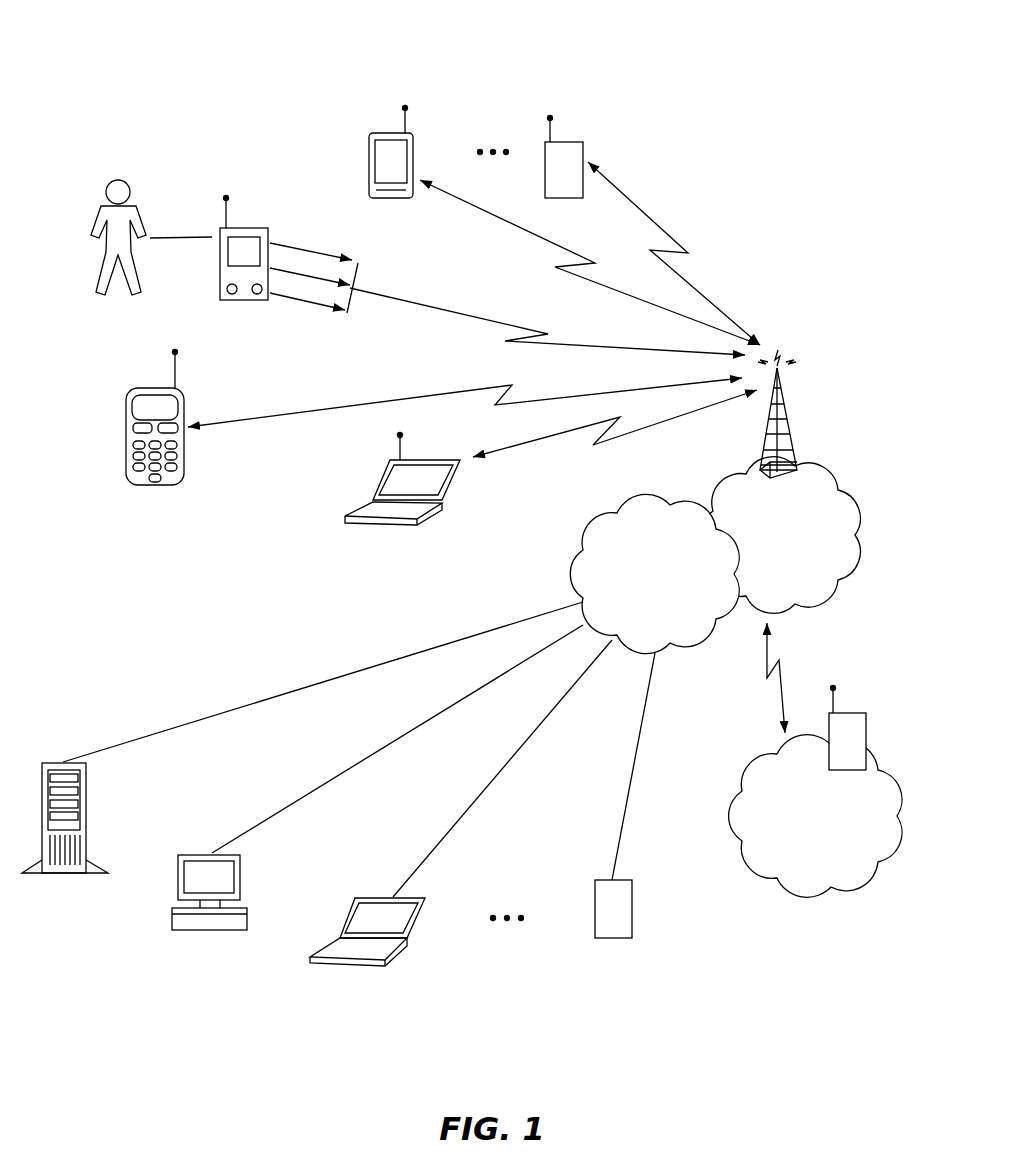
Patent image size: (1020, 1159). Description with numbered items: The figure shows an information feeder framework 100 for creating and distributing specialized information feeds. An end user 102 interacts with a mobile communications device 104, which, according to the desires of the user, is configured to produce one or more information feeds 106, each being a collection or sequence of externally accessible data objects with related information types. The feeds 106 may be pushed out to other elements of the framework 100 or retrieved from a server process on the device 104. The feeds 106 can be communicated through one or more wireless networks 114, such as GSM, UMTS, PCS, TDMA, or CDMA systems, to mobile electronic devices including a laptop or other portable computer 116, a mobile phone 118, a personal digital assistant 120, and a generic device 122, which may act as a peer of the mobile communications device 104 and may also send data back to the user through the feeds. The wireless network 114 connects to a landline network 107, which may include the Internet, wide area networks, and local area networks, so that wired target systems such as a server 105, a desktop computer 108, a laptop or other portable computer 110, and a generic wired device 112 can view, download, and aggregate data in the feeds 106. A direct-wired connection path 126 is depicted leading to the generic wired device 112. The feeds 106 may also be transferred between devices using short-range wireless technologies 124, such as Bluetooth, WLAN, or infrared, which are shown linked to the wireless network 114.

The information feeder framework 100 is at (760, 105).
The end user 102 is at (118, 178).
The mobile communications device 104 is at (246, 228).
The server 105 is at (90, 792).
The information feed 106 is at (293, 322).
The landline network 107 is at (630, 494).
The desktop computer 108 is at (240, 853).
The laptop computer 110 is at (413, 898).
The generic device 112 is at (598, 882).
The wireless network 114 is at (722, 492).
The laptop computer 116 is at (462, 478).
The mobile phone 118 is at (148, 388).
The personal digital assistant 120 is at (385, 133).
The generic device 122 is at (568, 142).
The short-range wireless technologies 124 is at (845, 897).
The connection path 126 is at (628, 802).